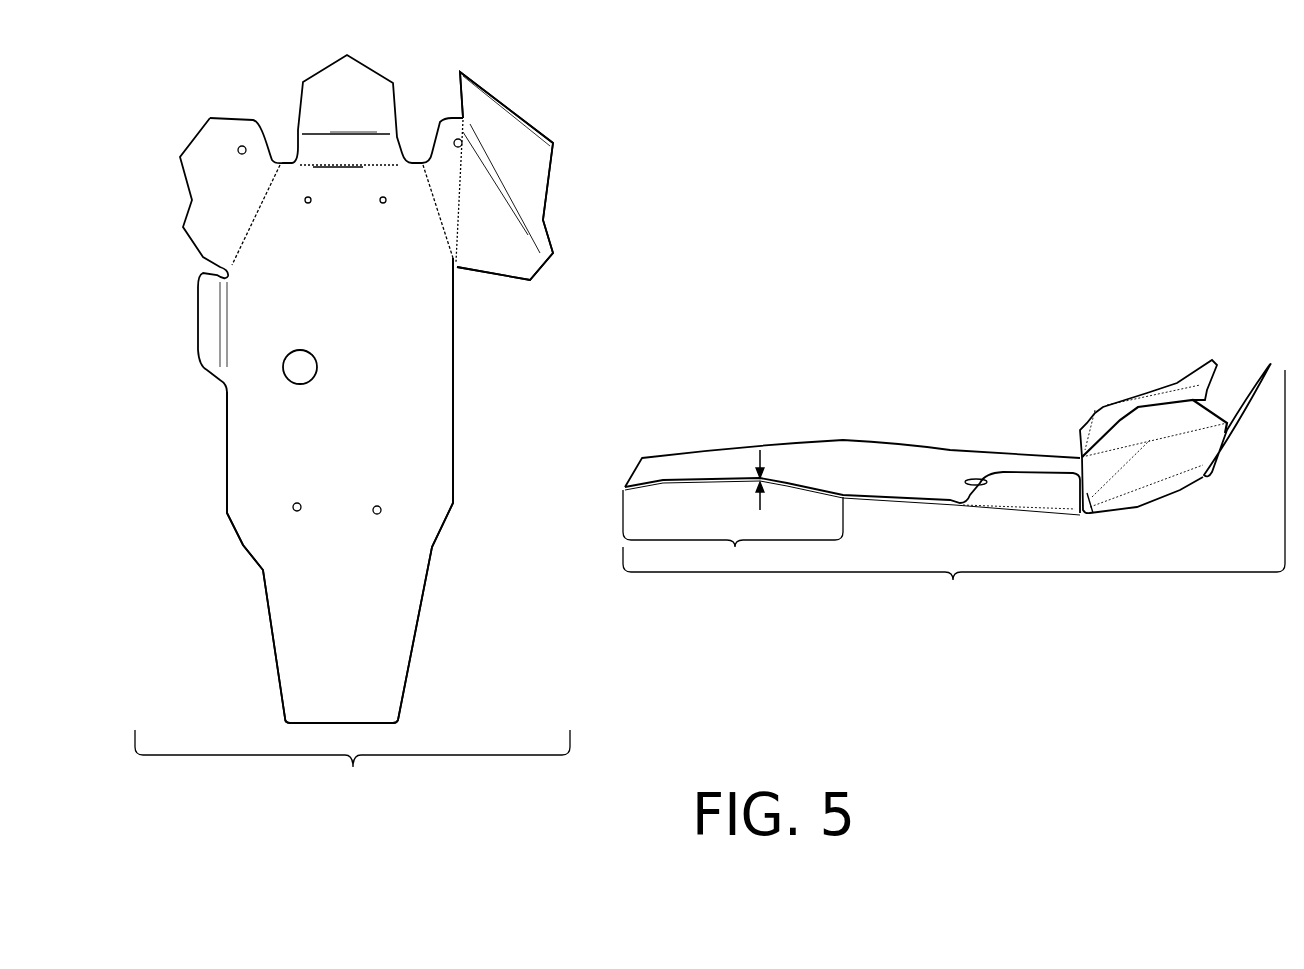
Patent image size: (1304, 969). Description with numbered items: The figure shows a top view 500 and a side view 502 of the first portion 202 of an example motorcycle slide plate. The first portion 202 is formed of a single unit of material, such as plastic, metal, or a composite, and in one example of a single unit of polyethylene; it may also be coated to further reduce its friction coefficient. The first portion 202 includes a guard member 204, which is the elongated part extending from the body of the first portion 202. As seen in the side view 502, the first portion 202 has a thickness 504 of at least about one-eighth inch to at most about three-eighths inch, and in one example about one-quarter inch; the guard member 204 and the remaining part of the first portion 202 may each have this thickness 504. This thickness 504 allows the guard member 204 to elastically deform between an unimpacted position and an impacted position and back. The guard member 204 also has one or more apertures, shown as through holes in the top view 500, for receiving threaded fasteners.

The top view 500 is at (352, 426).
The first portion 202 is at (453, 290).
The guard member 204 is at (413, 622).
The side view 502 is at (954, 492).
The thickness 504 is at (760, 512).